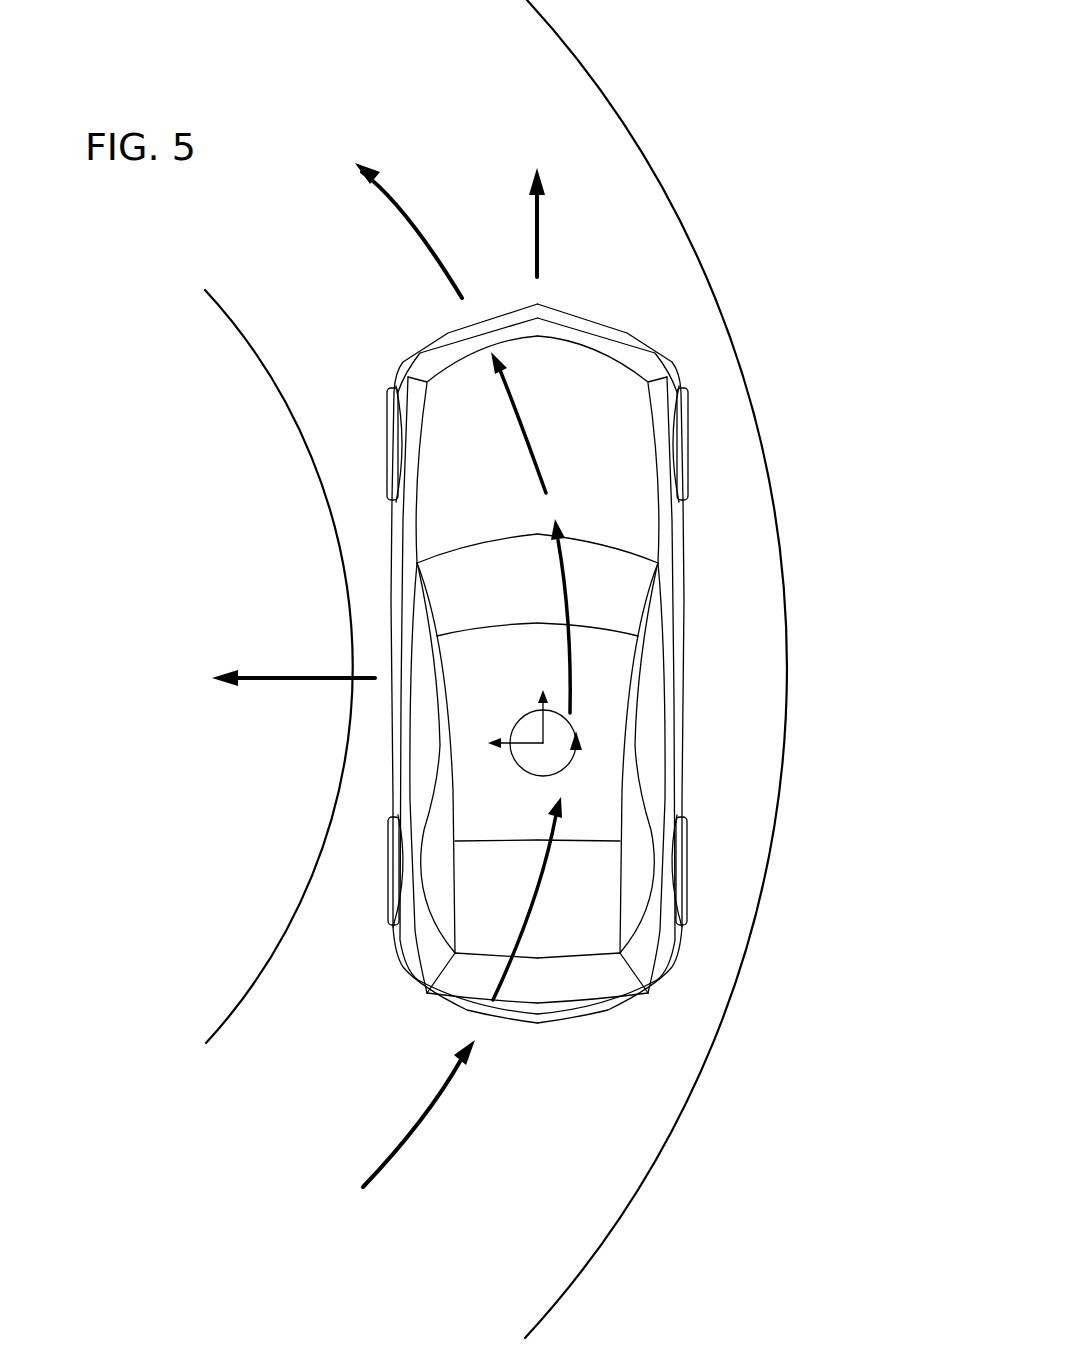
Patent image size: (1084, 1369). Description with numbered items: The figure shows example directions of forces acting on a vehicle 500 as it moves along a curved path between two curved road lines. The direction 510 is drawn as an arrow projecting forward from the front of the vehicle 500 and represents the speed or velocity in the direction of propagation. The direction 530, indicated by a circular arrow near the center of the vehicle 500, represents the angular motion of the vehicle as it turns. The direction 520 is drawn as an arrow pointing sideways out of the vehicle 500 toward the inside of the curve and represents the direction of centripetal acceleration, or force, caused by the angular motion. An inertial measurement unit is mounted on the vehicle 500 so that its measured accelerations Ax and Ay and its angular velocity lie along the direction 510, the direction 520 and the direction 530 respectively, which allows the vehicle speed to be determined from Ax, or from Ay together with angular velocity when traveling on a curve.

The vehicle 500 is at (675, 688).
The direction of speed/velocity 510 is at (532, 227).
The direction of centripetal acceleration 520 is at (277, 673).
The direction of angular motion 530 is at (523, 770).